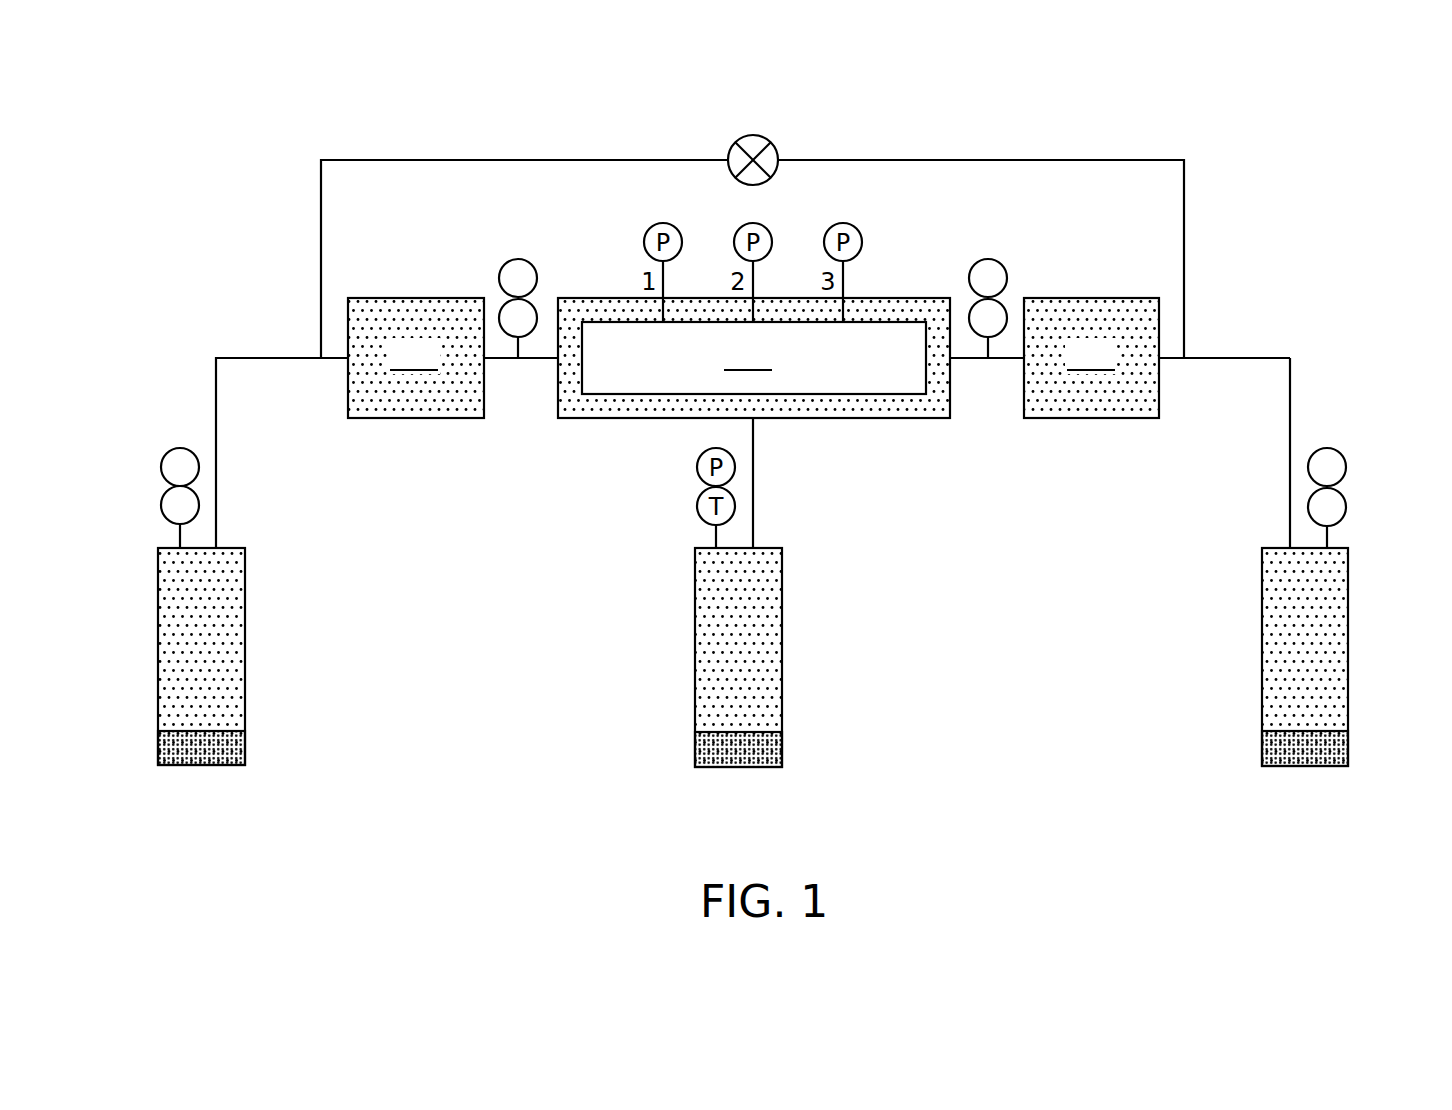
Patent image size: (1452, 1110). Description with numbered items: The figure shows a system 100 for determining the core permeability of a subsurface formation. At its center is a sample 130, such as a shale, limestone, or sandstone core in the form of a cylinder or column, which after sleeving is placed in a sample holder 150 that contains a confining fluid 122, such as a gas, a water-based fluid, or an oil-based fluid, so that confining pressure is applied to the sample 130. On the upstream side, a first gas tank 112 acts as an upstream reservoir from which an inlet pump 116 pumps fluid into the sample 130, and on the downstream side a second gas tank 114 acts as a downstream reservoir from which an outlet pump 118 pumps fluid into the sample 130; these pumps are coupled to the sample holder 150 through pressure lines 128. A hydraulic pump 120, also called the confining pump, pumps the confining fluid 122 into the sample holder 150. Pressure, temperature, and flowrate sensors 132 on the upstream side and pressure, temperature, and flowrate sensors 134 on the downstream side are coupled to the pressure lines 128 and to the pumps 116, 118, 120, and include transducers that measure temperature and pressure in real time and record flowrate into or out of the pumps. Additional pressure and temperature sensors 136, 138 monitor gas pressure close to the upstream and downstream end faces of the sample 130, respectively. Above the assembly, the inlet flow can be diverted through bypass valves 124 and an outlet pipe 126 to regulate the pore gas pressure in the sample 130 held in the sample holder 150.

The system 100 is at (322, 44).
The first gas tank 112 is at (416, 358).
The second gas tank 114 is at (1091, 358).
The inlet pump 116 is at (246, 646).
The outlet pump 118 is at (1262, 640).
The hydraulic pump 120 is at (783, 638).
The confining fluid 122 is at (937, 403).
The bypass valves 124 is at (779, 149).
The outlet pipe 126 is at (549, 160).
The pressure lines 128 is at (258, 358).
The sample 130 is at (754, 358).
The pressure, temperature, and flowrate sensors 132 is at (161, 463).
The pressure, temperature, and flowrate sensors 134 is at (1347, 508).
The pressure and temperature sensors 136 is at (518, 259).
The pressure and temperature sensors 138 is at (989, 259).
The sample holder 150 is at (833, 418).